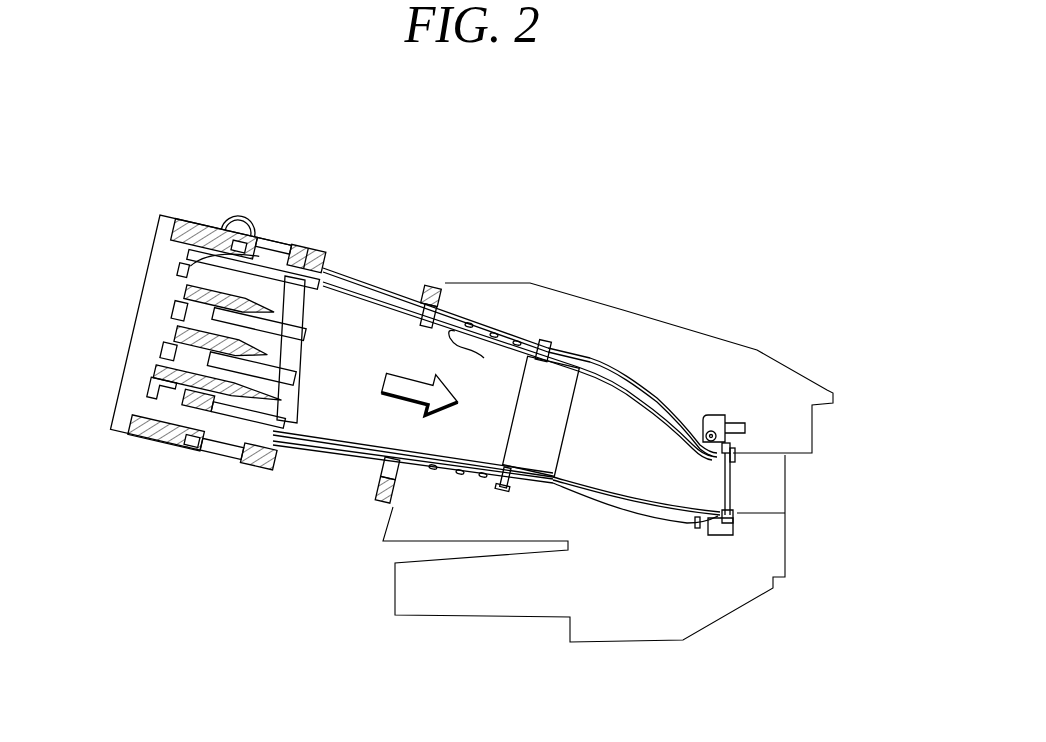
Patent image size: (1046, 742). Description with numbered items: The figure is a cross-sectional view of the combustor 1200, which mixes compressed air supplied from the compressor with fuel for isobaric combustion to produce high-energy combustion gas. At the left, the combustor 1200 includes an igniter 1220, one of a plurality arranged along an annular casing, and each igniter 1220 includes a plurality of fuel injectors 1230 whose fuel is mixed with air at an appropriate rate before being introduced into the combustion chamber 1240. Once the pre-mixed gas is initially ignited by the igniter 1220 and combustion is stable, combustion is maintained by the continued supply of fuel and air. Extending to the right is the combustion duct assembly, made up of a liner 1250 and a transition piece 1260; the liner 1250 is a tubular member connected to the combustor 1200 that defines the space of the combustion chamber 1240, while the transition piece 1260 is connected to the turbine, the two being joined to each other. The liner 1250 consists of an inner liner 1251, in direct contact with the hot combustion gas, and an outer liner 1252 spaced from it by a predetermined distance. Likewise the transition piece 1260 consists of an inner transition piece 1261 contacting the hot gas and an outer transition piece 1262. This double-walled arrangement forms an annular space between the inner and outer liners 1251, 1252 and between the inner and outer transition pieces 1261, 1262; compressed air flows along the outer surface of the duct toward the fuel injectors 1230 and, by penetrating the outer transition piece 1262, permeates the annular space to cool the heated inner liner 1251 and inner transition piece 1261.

The combustor 1200 is at (178, 125).
The igniter 1220 is at (155, 302).
The fuel injector 1230 is at (170, 328).
The combustion chamber 1240 is at (331, 413).
The liner 1250 is at (425, 321).
The inner liner 1251 is at (392, 297).
The outer liner 1252 is at (413, 375).
The transition piece 1260 is at (646, 374).
The inner transition piece 1261 is at (630, 392).
The outer transition piece 1262 is at (606, 372).